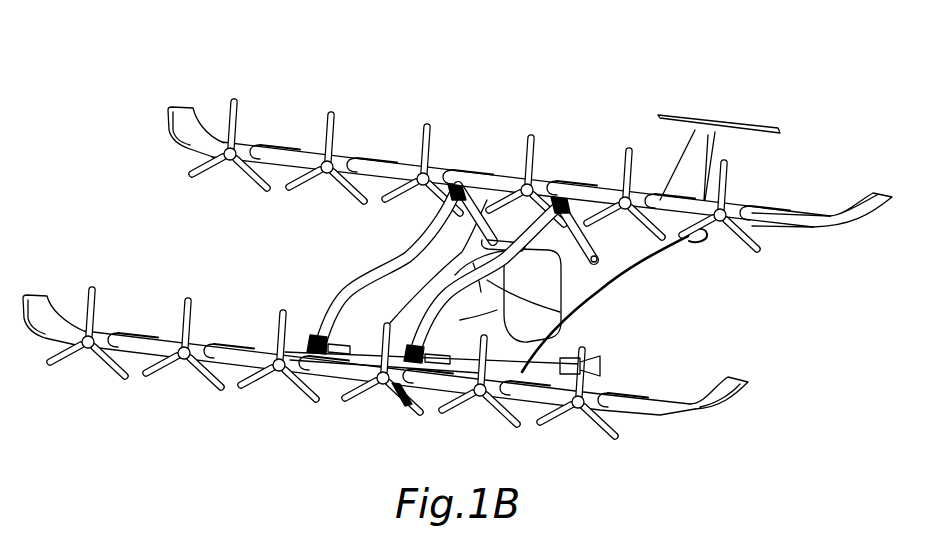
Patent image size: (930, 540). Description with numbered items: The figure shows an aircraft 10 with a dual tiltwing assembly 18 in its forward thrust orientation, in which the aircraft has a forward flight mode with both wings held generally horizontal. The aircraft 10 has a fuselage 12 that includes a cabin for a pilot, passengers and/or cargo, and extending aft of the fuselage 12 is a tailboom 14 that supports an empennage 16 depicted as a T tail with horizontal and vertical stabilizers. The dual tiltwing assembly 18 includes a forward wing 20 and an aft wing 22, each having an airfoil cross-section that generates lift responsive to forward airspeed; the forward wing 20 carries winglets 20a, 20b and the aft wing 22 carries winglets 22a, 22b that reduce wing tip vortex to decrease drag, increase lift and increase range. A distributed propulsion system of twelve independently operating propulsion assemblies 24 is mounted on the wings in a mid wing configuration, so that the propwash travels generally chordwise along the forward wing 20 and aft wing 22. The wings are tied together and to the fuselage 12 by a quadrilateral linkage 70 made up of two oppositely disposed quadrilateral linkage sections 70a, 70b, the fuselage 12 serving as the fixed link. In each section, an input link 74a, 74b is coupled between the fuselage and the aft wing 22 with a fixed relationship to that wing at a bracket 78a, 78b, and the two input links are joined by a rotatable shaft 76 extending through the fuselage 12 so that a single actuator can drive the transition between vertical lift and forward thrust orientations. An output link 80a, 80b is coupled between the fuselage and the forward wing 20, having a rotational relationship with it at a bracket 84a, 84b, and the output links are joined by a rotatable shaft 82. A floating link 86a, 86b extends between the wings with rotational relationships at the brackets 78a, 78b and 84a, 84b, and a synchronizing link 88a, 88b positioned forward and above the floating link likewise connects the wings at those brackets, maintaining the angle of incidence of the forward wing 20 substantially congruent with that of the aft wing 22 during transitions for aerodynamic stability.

The aircraft 10 is at (536, 80).
The fuselage 12 is at (583, 295).
The tailboom 14 is at (672, 244).
The empennage 16 is at (708, 147).
The dual tiltwing assembly 18 is at (305, 149).
The forward wing 20 is at (650, 400).
The winglet 20a is at (724, 398).
The winglet 20b is at (50, 300).
The aft wing 22 is at (795, 210).
The winglet 22a is at (866, 210).
The winglet 22b is at (193, 120).
The propulsion assembly 24 is at (358, 150).
The quadrilateral linkage 70 is at (370, 277).
The quadrilateral linkage section 70a is at (570, 322).
The quadrilateral linkage section 70b is at (398, 265).
The input link 74a is at (597, 215).
The input link 74b is at (487, 192).
The rotatable shaft 76 is at (607, 282).
The bracket 78a is at (561, 196).
The bracket 78b is at (484, 182).
The output link 80a is at (463, 358).
The output link 80b is at (352, 356).
The rotatable shaft 82 is at (531, 362).
The bracket 84a is at (441, 368).
The bracket 84b is at (348, 354).
The floating link 86a is at (556, 348).
The floating link 86b is at (393, 385).
The synchronizing link 88a is at (480, 292).
The synchronizing link 88b is at (342, 293).